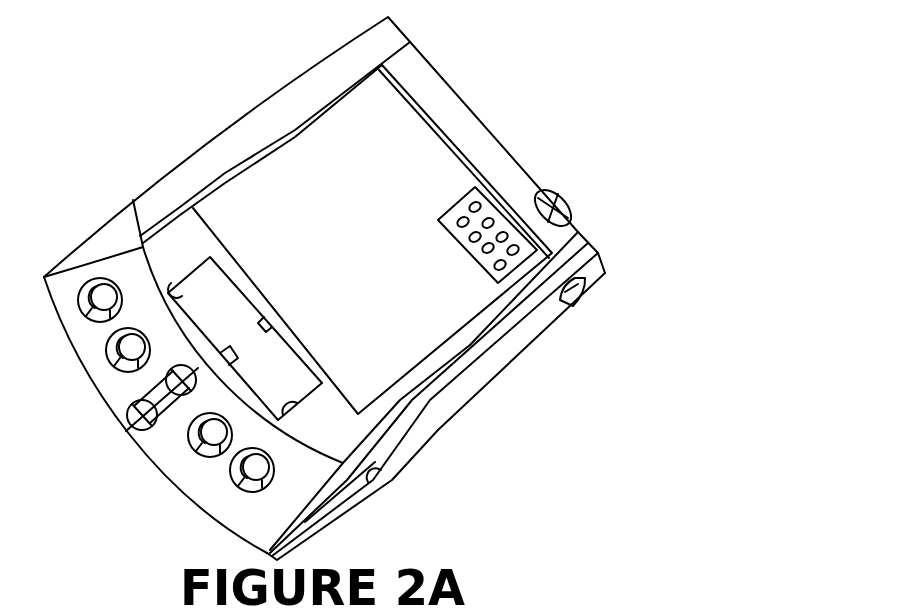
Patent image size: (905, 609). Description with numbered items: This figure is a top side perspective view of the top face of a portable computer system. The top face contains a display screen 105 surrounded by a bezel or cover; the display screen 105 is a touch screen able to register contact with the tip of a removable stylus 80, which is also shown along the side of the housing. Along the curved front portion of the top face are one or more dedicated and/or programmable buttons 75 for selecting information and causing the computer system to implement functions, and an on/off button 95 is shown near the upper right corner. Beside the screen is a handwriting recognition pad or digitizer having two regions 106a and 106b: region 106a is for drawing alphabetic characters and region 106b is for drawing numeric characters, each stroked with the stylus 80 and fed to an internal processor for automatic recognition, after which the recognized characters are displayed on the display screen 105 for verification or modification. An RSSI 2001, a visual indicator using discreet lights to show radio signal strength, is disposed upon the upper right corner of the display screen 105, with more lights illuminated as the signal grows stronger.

The buttons 75 is at (103, 297).
The stylus 80 is at (503, 350).
The on/off button 95 is at (572, 206).
The display screen 105 is at (395, 252).
The region 106a is at (242, 316).
The region 106b is at (305, 387).
The RSSI 2001 is at (477, 197).